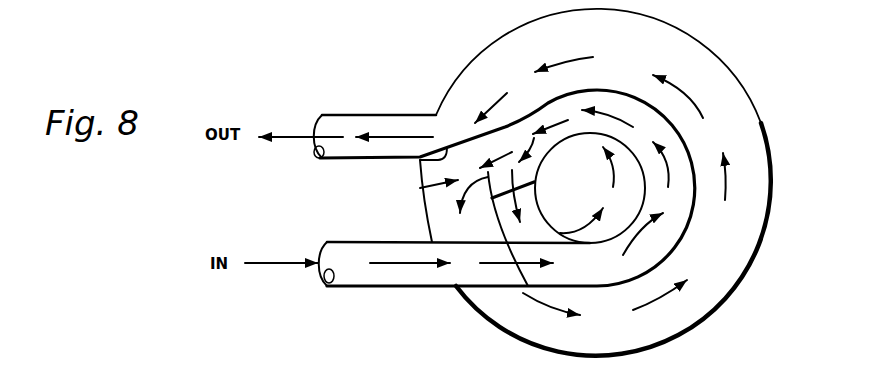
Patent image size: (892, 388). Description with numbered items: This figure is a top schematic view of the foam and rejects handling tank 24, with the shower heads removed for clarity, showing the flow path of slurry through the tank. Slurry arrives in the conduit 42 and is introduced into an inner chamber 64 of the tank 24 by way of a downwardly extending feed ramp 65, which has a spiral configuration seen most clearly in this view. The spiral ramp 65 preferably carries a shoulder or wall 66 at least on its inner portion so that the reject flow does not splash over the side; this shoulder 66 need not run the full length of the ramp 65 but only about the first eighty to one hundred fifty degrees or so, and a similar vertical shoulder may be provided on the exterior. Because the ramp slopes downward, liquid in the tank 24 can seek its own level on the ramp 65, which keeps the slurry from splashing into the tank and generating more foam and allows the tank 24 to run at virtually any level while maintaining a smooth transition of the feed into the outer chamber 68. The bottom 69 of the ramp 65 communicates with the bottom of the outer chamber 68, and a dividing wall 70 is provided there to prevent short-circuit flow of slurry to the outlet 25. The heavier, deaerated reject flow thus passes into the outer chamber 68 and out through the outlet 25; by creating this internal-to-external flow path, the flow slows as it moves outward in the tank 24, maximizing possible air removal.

The foam and rejects handling tank 24 is at (808, 50).
The outlet 25 is at (347, 114).
The conduit 42 is at (347, 276).
The inner chamber 64 is at (493, 222).
The feed ramp 65 is at (672, 203).
The shoulder 66 is at (600, 135).
The outer chamber 68 is at (712, 288).
The bottom 69 is at (420, 188).
The dividing wall 70 is at (430, 162).